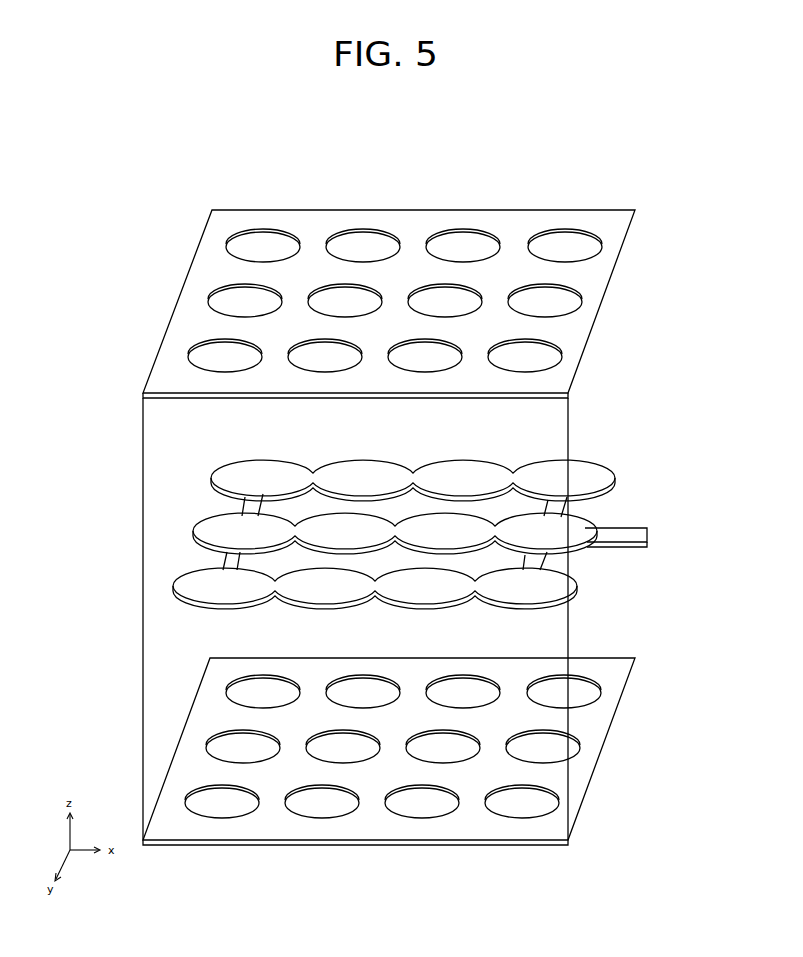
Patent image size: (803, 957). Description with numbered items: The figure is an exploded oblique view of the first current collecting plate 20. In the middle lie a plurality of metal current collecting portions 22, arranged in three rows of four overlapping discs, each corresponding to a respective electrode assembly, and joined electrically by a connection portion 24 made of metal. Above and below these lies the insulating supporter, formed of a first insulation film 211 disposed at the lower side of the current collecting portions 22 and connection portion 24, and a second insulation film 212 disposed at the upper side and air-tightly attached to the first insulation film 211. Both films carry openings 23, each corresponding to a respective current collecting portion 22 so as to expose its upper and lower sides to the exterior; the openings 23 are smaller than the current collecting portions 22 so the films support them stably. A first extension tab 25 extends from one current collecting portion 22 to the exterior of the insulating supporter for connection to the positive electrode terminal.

The first current collecting plate 20 is at (97, 501).
The first insulation film 211 is at (593, 725).
The second insulation film 212 is at (612, 220).
The current collecting portion 22 is at (472, 472).
The opening 23 is at (259, 249).
The connection portion 24 is at (312, 471).
The first extension tab 25 is at (648, 528).